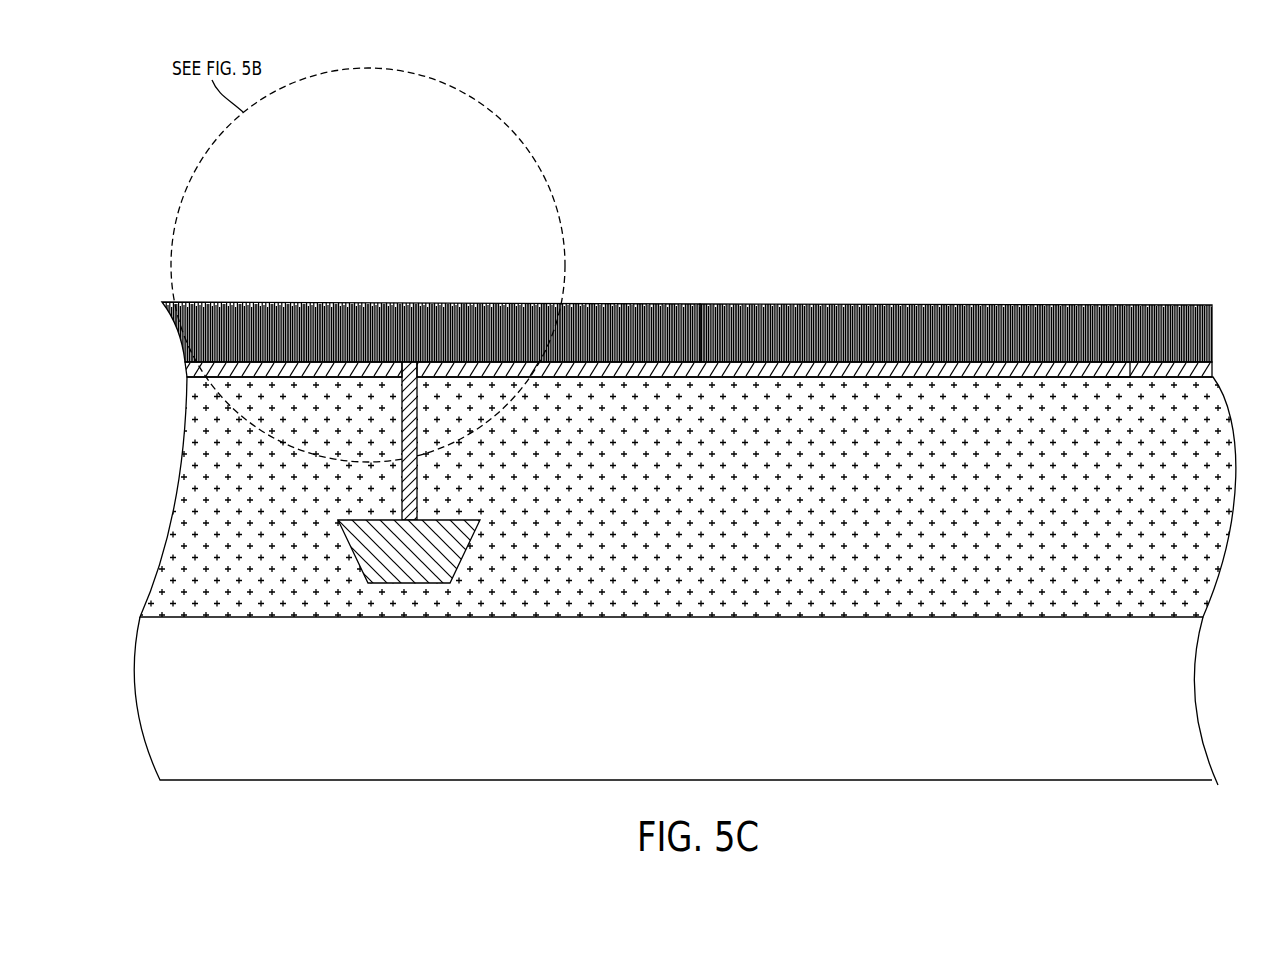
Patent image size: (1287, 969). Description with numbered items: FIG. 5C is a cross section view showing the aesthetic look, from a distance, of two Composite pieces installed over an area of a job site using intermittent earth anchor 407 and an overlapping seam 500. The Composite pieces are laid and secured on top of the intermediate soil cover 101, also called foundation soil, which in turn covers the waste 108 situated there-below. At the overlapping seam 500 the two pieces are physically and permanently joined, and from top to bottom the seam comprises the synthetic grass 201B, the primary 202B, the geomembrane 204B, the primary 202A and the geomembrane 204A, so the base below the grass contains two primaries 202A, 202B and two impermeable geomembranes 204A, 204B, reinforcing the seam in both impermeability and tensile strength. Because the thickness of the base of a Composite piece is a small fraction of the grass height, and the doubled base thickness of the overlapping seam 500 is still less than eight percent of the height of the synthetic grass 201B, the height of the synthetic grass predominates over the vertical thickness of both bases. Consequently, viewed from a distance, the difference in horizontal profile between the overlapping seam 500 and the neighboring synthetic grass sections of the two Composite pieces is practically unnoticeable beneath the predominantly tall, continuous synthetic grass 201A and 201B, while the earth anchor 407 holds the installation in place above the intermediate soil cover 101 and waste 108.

The overlapping seam 500 is at (333, 248).
The synthetic grass 201A is at (1203, 304).
The synthetic grass 201B is at (266, 302).
The geomembrane 204A is at (1212, 376).
The geomembrane 204B is at (240, 370).
The primary 202A is at (1115, 365).
The primary 202B is at (306, 364).
The earth anchor 407 is at (423, 559).
The intermediate soil cover 101 is at (1213, 518).
The waste 108 is at (1178, 690).